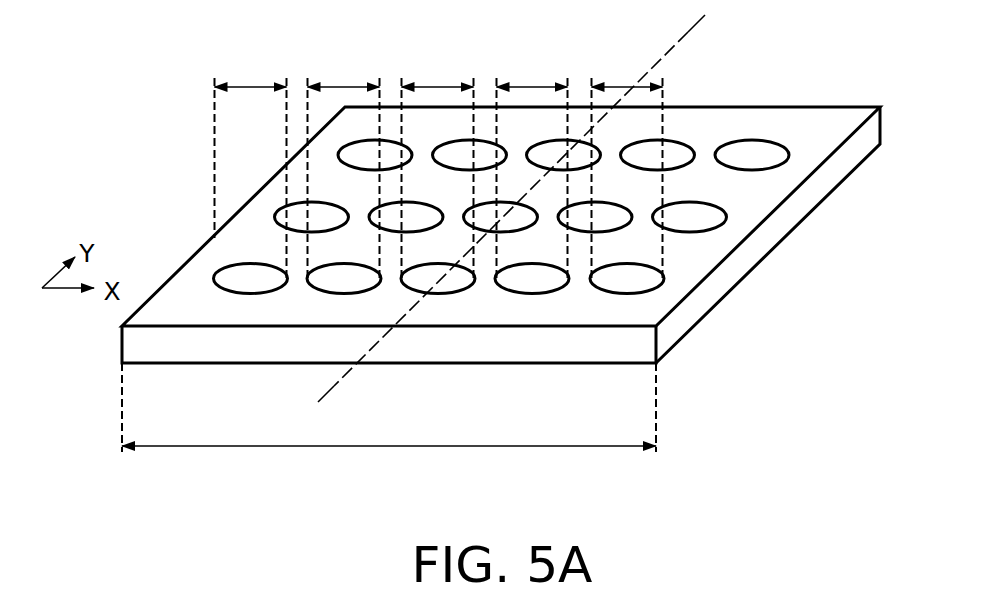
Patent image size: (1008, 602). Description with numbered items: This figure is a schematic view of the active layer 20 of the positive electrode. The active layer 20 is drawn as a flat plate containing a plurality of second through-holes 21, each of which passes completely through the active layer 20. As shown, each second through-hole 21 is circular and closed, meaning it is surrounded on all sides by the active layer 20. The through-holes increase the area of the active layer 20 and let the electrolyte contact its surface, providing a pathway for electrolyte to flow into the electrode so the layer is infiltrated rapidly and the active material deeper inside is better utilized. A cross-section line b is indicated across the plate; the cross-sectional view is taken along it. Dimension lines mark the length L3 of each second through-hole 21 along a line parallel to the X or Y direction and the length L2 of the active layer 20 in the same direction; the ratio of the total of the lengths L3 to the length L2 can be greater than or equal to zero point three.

The active layer 20 is at (687, 118).
The second through-hole 21 is at (753, 150).
The length of the second through-hole L3 is at (439, 163).
The length of the active layer L2 is at (389, 407).
The line b- b is at (700, 27).